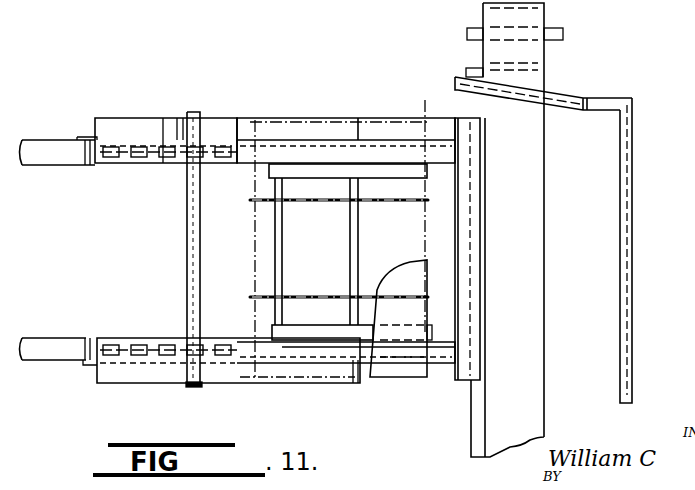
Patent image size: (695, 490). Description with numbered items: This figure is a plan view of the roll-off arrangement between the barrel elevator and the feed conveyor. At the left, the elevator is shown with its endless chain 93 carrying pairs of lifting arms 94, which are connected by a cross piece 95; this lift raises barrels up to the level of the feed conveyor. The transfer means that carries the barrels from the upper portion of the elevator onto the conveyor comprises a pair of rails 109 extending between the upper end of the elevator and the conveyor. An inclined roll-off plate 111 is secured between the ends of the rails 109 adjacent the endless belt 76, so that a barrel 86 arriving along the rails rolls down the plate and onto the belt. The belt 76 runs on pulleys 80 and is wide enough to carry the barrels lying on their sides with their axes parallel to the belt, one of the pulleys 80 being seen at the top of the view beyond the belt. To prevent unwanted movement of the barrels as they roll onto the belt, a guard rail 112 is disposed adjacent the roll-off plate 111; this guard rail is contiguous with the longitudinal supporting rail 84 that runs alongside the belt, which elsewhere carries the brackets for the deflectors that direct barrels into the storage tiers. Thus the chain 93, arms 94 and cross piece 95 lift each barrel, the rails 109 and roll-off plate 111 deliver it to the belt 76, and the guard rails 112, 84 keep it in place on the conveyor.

The endless belt 76 is at (530, 185).
The pulleys 80 is at (493, 52).
The supporting rail 84 is at (620, 232).
The barrel 86 is at (405, 378).
The endless chain 93 is at (140, 153).
The lifting arms 94 is at (393, 172).
The cross piece 95 is at (350, 240).
The rails 109 is at (373, 140).
The inclined roll-off plate 111 is at (465, 252).
The guard rail 112 is at (545, 90).